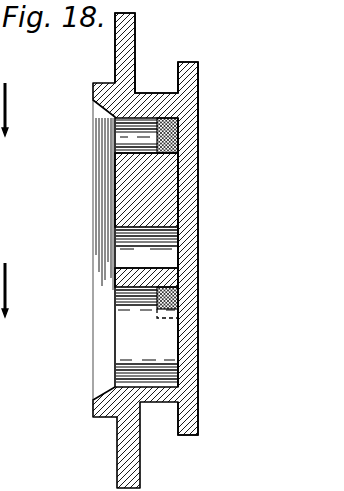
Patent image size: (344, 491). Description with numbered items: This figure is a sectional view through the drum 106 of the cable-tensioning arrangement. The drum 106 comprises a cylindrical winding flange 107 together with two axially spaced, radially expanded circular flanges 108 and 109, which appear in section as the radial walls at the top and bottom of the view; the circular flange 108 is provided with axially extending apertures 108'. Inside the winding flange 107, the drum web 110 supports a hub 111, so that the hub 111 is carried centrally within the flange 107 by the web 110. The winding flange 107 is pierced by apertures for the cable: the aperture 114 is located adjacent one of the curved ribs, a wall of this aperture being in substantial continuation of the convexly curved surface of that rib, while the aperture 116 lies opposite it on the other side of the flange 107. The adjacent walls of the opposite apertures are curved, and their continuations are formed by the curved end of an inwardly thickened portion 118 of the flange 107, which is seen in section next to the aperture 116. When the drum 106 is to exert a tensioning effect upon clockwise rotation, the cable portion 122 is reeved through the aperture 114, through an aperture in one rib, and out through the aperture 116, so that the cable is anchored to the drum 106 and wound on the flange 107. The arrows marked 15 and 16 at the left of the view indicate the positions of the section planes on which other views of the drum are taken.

The drum 106 is at (198, 388).
The cylindrical winding flange 107 is at (143, 91).
The circular flange 108 is at (152, 49).
The axially extending apertures 108' is at (95, 60).
The circular flange 109 is at (193, 63).
The drum web 110 is at (180, 136).
The hub 111 is at (133, 213).
The aperture 114 is at (199, 94).
The aperture 116 is at (198, 312).
The inwardly thickened portion 118 is at (163, 343).
The cable portion 122 is at (193, 292).
The section line for FIG. 15 is at (16, 112).
The section line for FIG. 16 is at (17, 292).